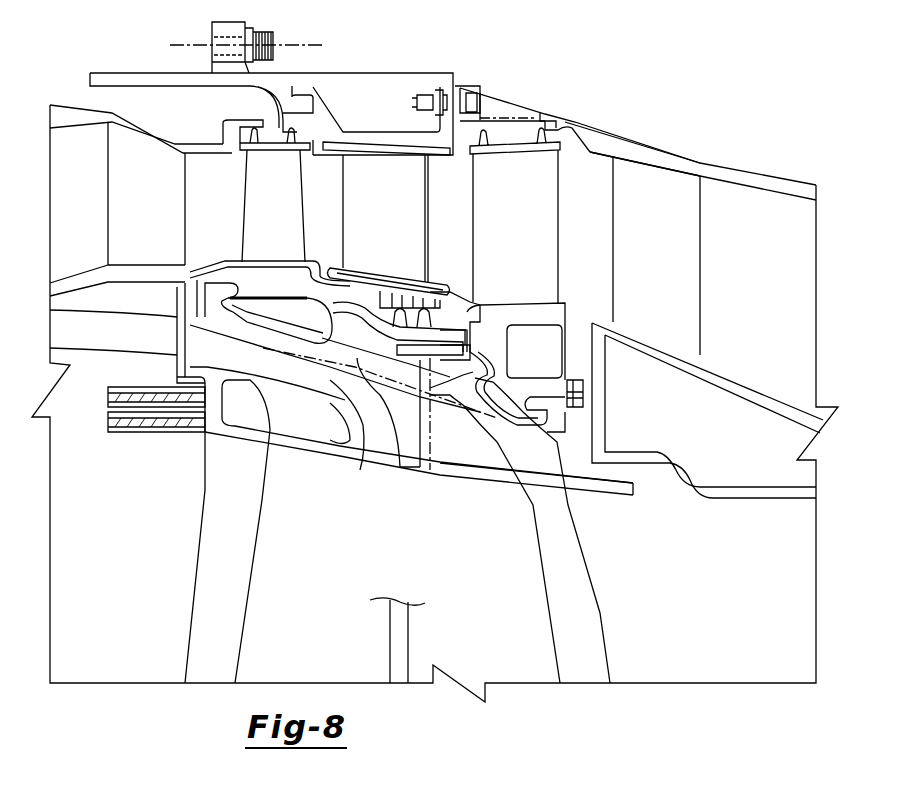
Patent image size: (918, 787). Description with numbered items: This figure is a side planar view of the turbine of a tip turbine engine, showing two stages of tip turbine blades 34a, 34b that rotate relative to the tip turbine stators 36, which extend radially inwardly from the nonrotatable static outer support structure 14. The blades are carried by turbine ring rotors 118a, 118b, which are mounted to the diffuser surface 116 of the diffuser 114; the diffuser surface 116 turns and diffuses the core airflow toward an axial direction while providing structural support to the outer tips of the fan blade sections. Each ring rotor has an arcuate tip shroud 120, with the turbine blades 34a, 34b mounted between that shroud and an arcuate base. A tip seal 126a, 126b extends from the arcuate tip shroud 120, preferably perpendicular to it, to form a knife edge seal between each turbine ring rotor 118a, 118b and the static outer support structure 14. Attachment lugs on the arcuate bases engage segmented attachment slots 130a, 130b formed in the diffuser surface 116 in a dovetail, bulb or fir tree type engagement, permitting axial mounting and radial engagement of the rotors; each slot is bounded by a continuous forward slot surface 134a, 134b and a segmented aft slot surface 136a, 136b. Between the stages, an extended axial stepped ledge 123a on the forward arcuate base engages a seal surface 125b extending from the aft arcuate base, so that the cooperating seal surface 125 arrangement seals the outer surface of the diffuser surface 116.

The static outer support structure 14 is at (497, 103).
The tip seal 126a is at (247, 137).
The turbine ring rotor 118a is at (298, 139).
The tip seal 126b is at (555, 130).
The turbine blades 34a is at (288, 198).
The tip turbine stators 36 is at (398, 198).
The turbine blades 34b is at (531, 215).
The turbine ring rotor 118b is at (570, 188).
The segmented aft slot surface 136a is at (312, 302).
The diffuser surface 116 is at (420, 368).
The extended axial stepped ledge 123a is at (470, 322).
The continuous forward slot surface 134a is at (213, 305).
The seal surface 125b is at (480, 342).
The arcuate tip shroud 120 is at (583, 392).
The segmented aft slot surface 136b is at (553, 412).
The segmented attachment slot 130a is at (302, 327).
The diffuser 114 is at (347, 375).
The continuous forward slot surface 134b is at (420, 395).
The seal surface 125 is at (493, 400).
The segmented attachment slot 130b is at (555, 440).